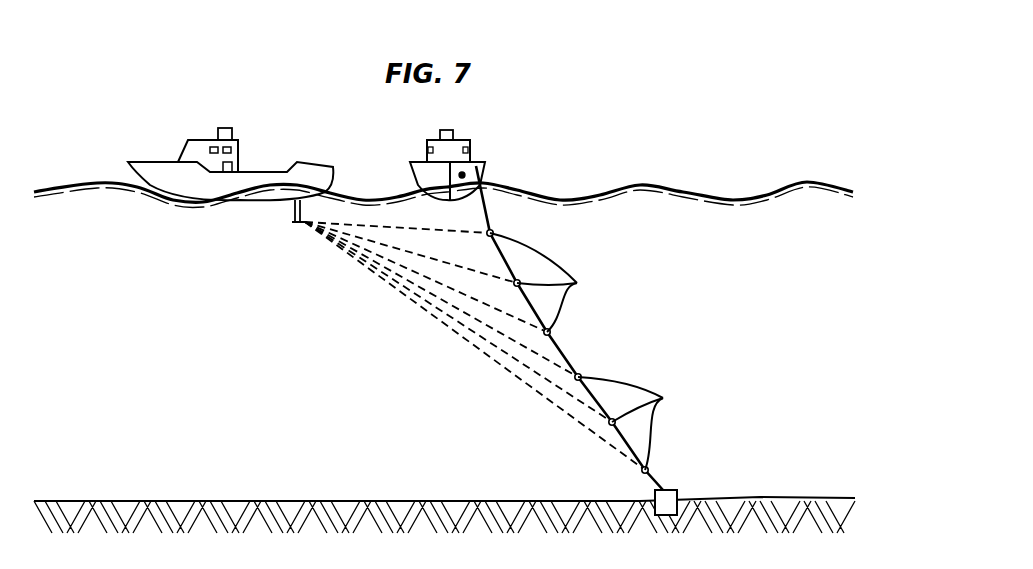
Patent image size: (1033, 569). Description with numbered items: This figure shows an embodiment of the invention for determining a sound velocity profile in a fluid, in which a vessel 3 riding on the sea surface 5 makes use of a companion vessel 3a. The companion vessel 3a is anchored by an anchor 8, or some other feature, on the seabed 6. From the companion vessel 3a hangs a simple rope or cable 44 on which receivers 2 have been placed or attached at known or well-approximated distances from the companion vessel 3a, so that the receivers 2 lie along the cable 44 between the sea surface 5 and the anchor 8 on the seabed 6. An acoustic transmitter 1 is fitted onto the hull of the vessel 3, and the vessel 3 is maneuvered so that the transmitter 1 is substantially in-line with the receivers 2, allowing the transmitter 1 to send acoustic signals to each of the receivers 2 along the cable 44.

The acoustic transmitter 1 is at (294, 221).
The receivers 2 is at (580, 283).
The vessel 3 is at (130, 160).
The companion vessel 3a is at (476, 165).
The sea surface 5 is at (637, 182).
The seabed 6 is at (150, 500).
The anchor 8 is at (668, 490).
The rope or cable 44 is at (568, 353).